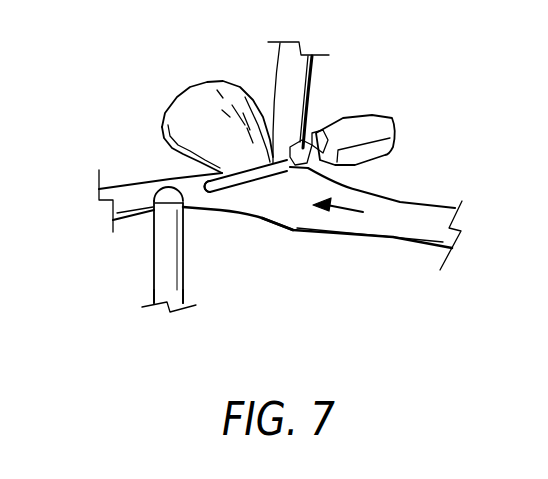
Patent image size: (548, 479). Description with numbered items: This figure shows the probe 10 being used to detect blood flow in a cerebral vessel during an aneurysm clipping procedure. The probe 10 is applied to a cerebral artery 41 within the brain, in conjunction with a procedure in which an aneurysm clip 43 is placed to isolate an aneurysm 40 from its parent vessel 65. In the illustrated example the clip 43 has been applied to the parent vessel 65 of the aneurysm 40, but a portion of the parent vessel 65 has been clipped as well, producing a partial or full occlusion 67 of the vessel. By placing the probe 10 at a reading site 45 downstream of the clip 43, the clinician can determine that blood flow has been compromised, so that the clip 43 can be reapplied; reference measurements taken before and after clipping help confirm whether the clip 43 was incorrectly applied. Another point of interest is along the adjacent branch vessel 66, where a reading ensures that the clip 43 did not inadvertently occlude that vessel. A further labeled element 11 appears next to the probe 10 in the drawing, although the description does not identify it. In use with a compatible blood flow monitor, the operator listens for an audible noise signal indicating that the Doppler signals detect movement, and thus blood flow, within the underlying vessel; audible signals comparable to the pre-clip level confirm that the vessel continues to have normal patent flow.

The probe 10 is at (152, 248).
The post 11 is at (165, 184).
The aneurysm 40 is at (210, 97).
The cerebral artery 41 is at (397, 207).
The aneurysm clip 43 is at (357, 118).
The reading site 45 is at (186, 155).
The parent vessel 65 is at (250, 195).
The adjacent branch vessel 66 is at (311, 96).
The occlusion 67 is at (193, 175).